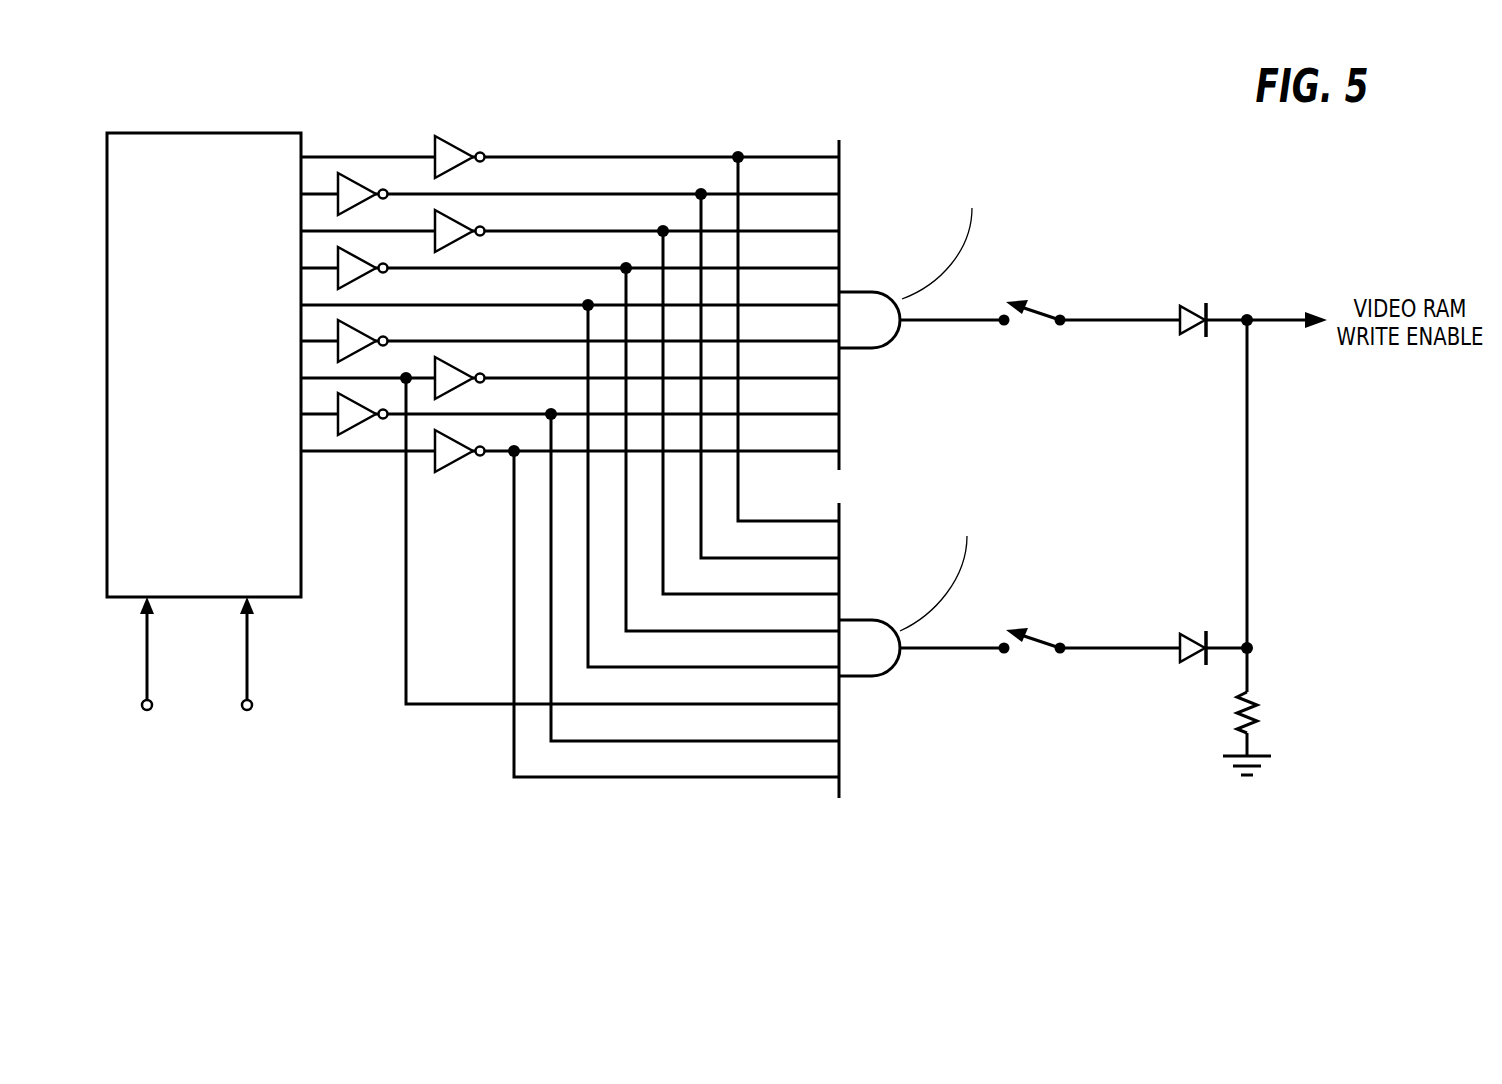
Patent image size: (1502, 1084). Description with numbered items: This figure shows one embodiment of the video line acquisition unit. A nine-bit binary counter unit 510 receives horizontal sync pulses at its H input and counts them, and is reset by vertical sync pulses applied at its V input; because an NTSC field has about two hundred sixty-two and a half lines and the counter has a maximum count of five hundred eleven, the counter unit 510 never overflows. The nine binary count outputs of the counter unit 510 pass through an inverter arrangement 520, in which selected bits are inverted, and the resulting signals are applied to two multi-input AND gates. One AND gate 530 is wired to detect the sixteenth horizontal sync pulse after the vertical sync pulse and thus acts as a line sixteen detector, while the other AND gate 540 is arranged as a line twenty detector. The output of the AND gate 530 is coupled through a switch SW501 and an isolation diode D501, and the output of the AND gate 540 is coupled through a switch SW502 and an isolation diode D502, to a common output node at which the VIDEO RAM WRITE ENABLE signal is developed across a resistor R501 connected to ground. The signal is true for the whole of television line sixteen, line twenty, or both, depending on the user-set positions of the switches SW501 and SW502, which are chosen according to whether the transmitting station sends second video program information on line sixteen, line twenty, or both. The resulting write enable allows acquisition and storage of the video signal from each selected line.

The 9-bit binary counter unit 510 is at (146, 132).
The inverter arrangement 520 is at (372, 113).
The AND gate 530 is at (864, 291).
The AND gate 540 is at (866, 620).
The switch SW501 is at (1026, 323).
The switch SW502 is at (1012, 654).
The isolation diode D501 is at (1178, 308).
The isolation diode D502 is at (1178, 637).
The resistor R501 is at (1258, 712).